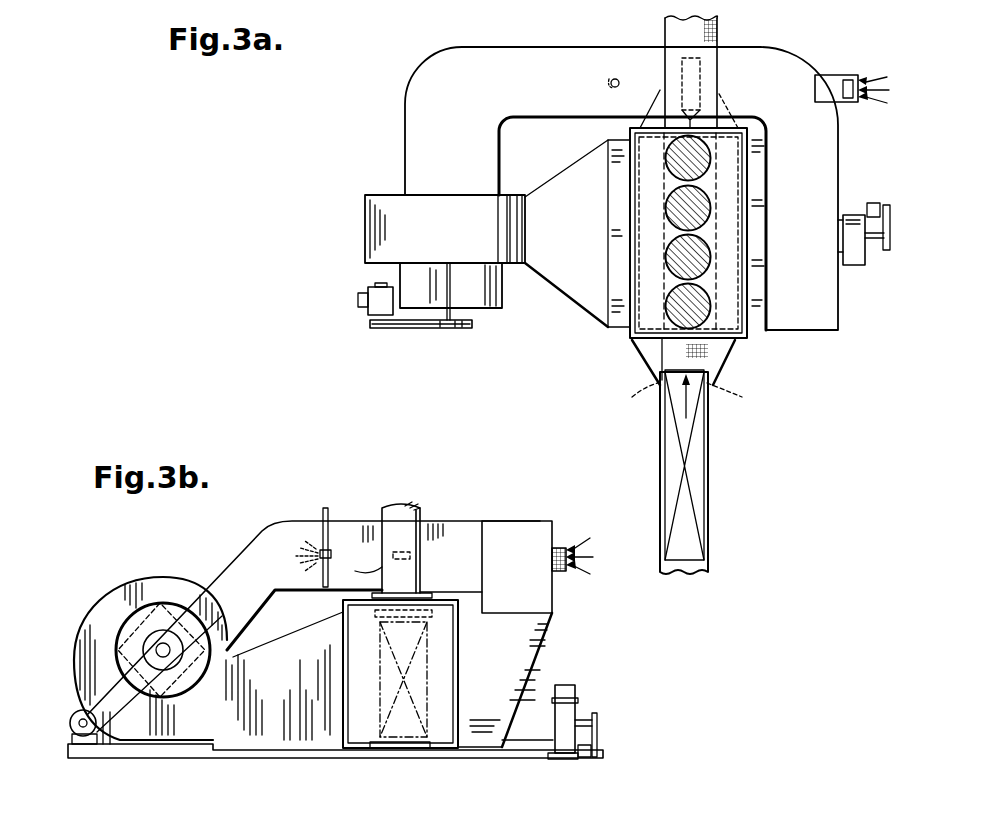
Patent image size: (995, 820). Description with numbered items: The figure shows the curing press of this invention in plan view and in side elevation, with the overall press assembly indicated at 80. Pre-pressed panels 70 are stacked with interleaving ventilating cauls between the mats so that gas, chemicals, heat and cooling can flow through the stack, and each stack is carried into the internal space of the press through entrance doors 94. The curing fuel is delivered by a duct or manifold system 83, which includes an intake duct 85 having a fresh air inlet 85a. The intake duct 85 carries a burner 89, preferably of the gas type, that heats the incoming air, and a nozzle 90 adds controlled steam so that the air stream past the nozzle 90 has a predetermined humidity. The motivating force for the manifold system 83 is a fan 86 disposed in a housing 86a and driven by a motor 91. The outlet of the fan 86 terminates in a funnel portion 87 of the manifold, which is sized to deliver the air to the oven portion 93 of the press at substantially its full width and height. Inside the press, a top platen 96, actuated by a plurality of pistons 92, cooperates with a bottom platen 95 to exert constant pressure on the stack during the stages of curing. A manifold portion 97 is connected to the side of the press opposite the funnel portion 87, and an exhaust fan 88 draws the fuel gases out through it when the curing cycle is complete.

In FIG. 3A, the panels 70 is at (700, 475).
In FIG. 3A, the drying apparatus 80 is at (338, 221).
In FIG. 3B, the drying apparatus 80 is at (179, 541).
In FIG. 3A, the duct system 83 is at (569, 89).
In FIG. 3B, the duct system 83 is at (258, 538).
In FIG. 3A, the intake duct 85 is at (805, 30).
In FIG. 3B, the intake duct 85 is at (473, 521).
In FIG. 3A, the fresh air inlet 85a is at (835, 75).
In FIG. 3B, the fresh air inlet 85a is at (566, 546).
In FIG. 3A, the fan 86 is at (380, 240).
In FIG. 3B, the fan 86 is at (88, 633).
In FIG. 3B, the housing 86a is at (114, 595).
In FIG. 3A, the funnel portion 87 is at (575, 239).
In FIG. 3B, the funnel portion 87 is at (290, 701).
In FIG. 3A, the exhaust fan 88 is at (865, 265).
In FIG. 3B, the exhaust fan 88 is at (573, 703).
In FIG. 3A, the burner 89 is at (700, 70).
In FIG. 3B, the burner 89 is at (402, 548).
In FIG. 3A, the nozzle 90 is at (614, 78).
In FIG. 3B, the nozzle 90 is at (326, 520).
In FIG. 3A, the motor 91 is at (372, 305).
In FIG. 3B, the motor 91 is at (70, 724).
In FIG. 3A, the pistons 92 is at (711, 157).
In FIG. 3B, the pistons 92 is at (361, 560).
In FIG. 3A, the oven portion 93 is at (748, 226).
In FIG. 3B, the oven portion 93 is at (458, 665).
In FIG. 3A, the entrance doors 94 is at (666, 84).
In FIG. 3B, the entrance doors 94 is at (440, 693).
In FIG. 3B, the bottom platen 95 is at (417, 750).
In FIG. 3B, the top platen 96 is at (432, 610).
In FIG. 3B, the manifold portion 97 is at (540, 652).